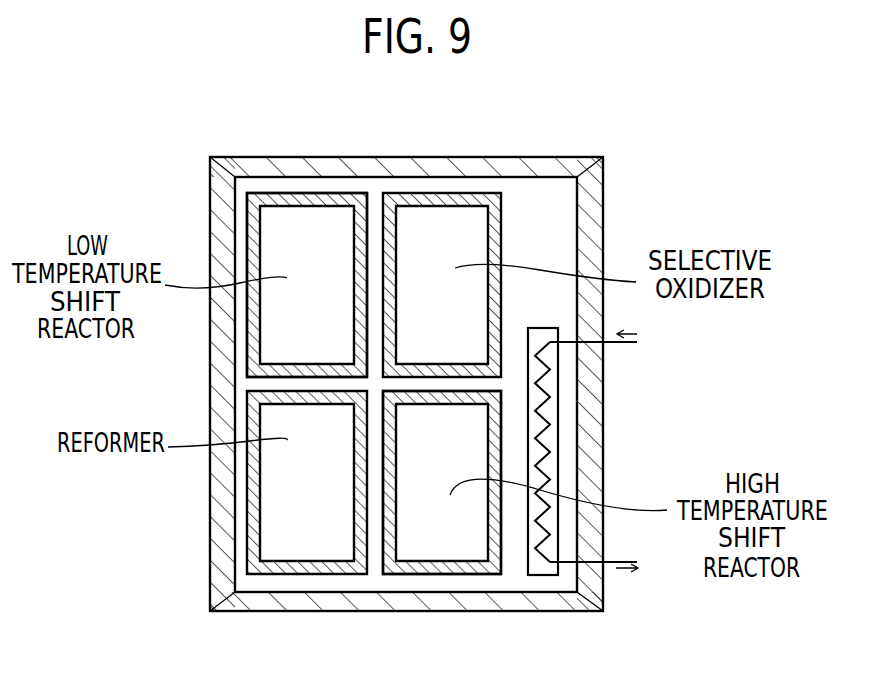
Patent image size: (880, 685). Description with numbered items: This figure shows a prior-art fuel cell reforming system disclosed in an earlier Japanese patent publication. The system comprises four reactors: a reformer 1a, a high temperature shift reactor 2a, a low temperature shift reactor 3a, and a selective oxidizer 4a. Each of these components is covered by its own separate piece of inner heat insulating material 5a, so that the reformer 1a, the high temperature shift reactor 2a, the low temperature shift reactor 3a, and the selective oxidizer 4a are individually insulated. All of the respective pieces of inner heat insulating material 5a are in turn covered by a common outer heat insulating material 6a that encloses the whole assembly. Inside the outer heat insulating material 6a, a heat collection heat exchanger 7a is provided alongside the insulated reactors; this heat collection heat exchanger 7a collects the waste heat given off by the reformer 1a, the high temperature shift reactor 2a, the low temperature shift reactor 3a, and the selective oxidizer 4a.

The reformer 1a is at (280, 542).
The high temperature shift reactor 2a is at (465, 525).
The low temperature shift reactor 3a is at (279, 225).
The selective oxidizer 4a is at (466, 235).
The inner heat insulating material 5a is at (320, 200).
The outer heat insulating material 6a is at (522, 163).
The heat collection heat exchanger 7a is at (555, 450).